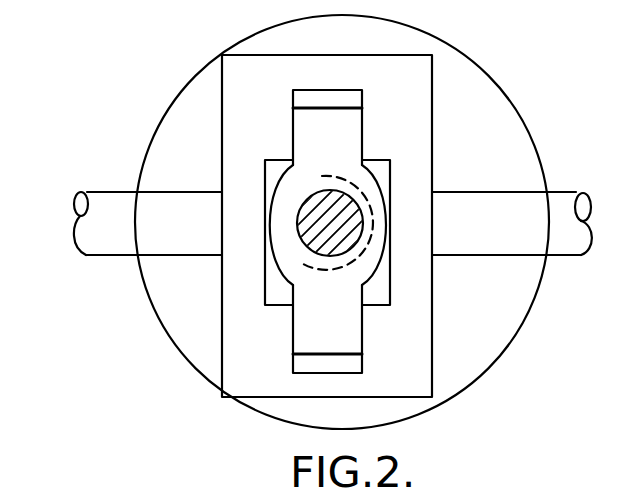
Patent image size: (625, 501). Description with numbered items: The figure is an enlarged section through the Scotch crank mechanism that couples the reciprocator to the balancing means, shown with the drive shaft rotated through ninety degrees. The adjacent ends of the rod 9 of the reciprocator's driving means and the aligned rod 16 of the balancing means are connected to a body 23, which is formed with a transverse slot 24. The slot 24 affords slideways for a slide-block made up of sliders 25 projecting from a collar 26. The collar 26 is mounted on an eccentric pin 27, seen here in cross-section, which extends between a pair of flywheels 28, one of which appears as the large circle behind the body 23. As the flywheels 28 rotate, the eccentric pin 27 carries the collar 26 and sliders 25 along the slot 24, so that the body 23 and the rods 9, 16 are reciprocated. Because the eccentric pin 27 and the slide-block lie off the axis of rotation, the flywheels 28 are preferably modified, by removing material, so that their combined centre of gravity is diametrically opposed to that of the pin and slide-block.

The rod 9 is at (507, 202).
The rod 16 is at (103, 210).
The body 23 is at (418, 77).
The transverse slot 24 is at (268, 166).
The sliders 25 is at (327, 127).
The collar 26 is at (365, 185).
The eccentric pin 27 is at (317, 232).
The flywheels 28 is at (195, 318).